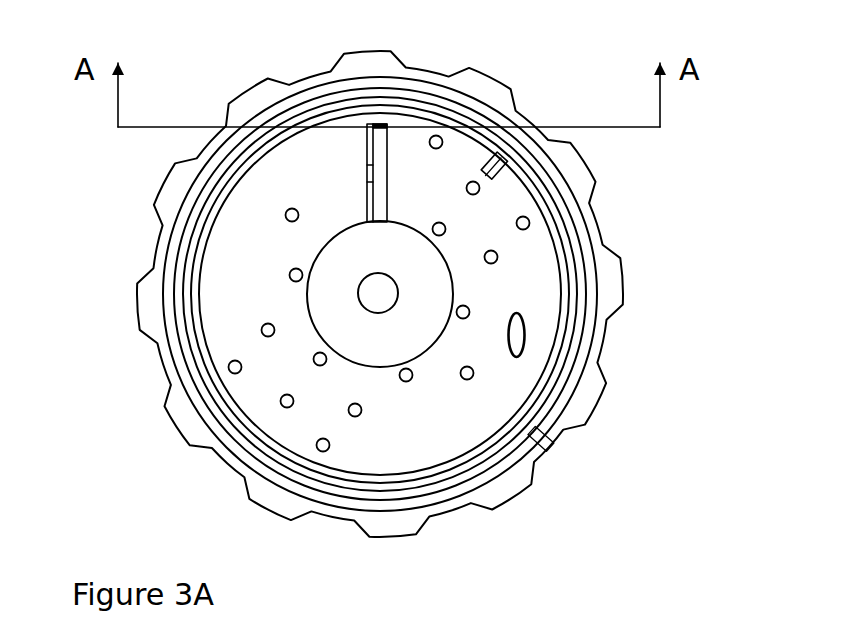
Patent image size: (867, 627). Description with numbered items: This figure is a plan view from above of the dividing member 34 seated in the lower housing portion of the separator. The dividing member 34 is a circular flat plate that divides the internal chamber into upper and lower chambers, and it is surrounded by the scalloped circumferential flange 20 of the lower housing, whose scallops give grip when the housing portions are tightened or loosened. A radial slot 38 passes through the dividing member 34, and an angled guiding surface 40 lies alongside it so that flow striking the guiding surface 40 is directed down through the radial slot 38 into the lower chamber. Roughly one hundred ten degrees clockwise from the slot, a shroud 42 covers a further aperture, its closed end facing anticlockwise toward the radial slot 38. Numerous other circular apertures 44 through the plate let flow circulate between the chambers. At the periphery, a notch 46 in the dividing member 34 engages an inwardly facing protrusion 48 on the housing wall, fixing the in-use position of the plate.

The circumferential flange 20 is at (625, 272).
The dividing member 34 is at (549, 311).
The radial slot 38 is at (364, 158).
The angled guiding surface 40 is at (392, 173).
The shroud 42 is at (529, 355).
The circular apertures 44 is at (405, 391).
The notch 46 is at (513, 171).
The protrusion 48 is at (511, 157).